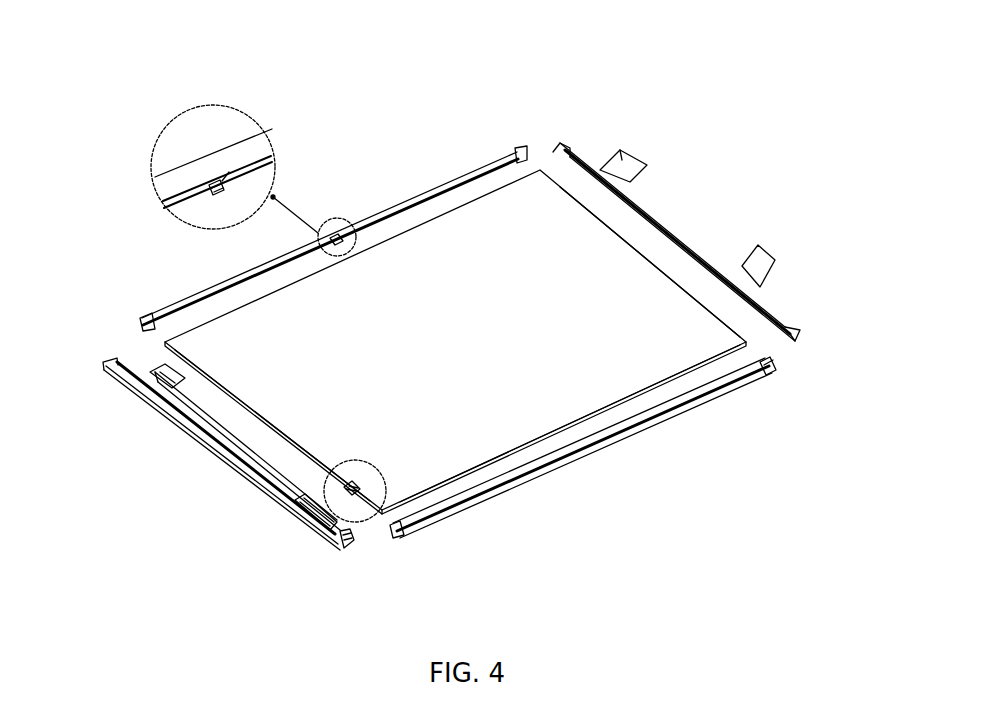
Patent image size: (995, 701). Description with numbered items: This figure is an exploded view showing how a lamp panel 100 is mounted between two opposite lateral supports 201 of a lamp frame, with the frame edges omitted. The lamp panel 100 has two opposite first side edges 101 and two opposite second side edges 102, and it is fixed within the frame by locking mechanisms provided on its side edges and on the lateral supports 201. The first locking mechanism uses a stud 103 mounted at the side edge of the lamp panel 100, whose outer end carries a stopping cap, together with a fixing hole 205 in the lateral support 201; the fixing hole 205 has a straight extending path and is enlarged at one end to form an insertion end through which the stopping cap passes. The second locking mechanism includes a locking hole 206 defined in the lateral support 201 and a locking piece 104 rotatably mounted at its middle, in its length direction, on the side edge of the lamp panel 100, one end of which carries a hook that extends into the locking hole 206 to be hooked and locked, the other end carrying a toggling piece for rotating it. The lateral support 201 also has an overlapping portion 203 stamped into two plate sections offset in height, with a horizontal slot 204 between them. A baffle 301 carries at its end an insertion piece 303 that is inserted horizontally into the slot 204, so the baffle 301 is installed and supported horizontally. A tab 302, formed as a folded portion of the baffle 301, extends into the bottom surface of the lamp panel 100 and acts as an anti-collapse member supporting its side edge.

The lamp panel 100 is at (533, 190).
The first side edge 101 is at (648, 257).
The second side edge 102 is at (600, 457).
The stud 103 is at (203, 373).
The locking piece 104 is at (350, 482).
The lateral support 201 is at (657, 183).
The overlapping portion 203 is at (340, 543).
The slot 204 is at (348, 537).
The fixing hole 205 is at (145, 385).
The locking hole 206 is at (303, 510).
The baffle 301 is at (253, 153).
The tab 302 is at (215, 186).
The insertion piece 303 is at (767, 367).